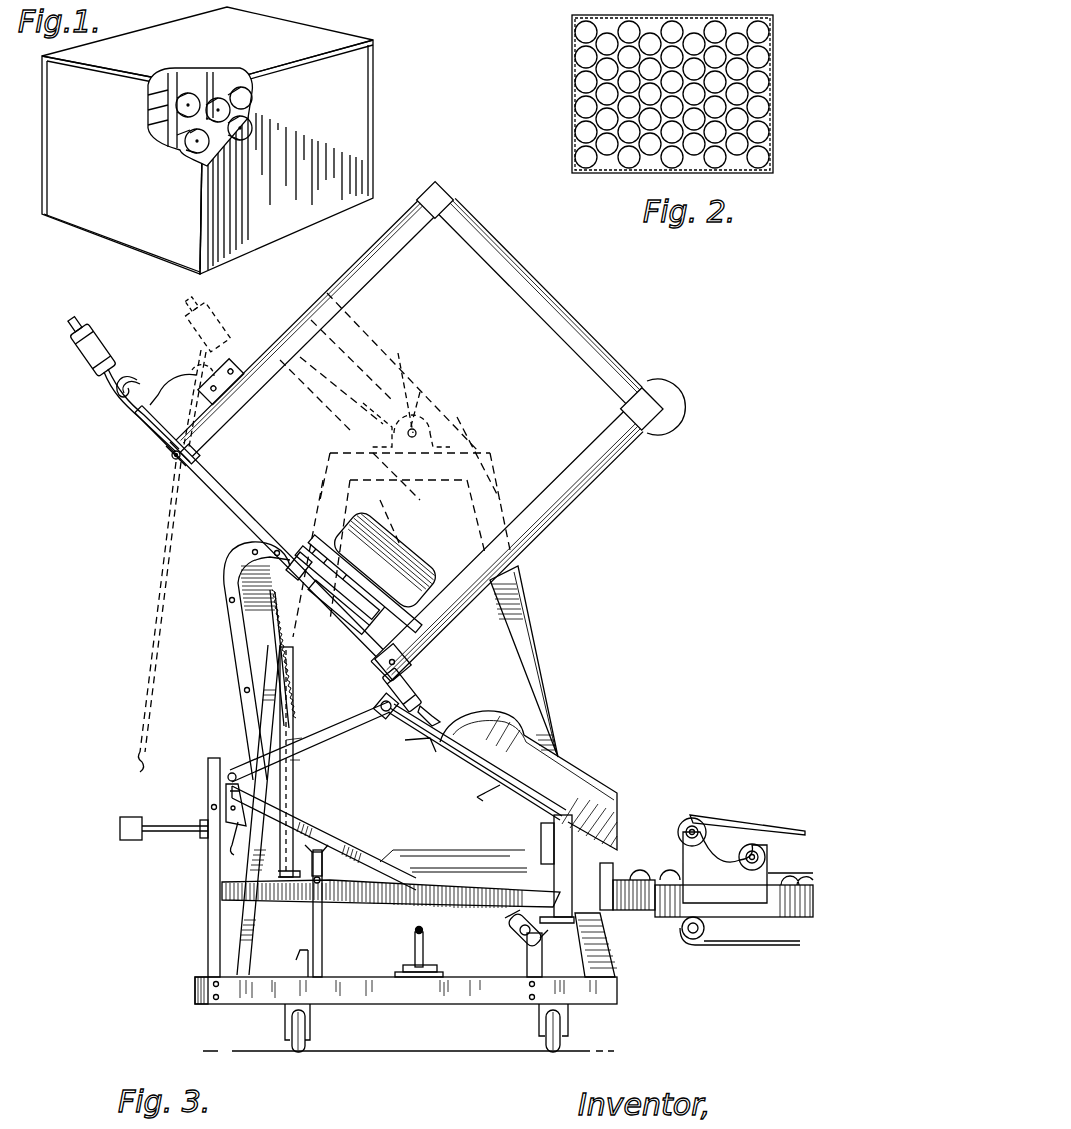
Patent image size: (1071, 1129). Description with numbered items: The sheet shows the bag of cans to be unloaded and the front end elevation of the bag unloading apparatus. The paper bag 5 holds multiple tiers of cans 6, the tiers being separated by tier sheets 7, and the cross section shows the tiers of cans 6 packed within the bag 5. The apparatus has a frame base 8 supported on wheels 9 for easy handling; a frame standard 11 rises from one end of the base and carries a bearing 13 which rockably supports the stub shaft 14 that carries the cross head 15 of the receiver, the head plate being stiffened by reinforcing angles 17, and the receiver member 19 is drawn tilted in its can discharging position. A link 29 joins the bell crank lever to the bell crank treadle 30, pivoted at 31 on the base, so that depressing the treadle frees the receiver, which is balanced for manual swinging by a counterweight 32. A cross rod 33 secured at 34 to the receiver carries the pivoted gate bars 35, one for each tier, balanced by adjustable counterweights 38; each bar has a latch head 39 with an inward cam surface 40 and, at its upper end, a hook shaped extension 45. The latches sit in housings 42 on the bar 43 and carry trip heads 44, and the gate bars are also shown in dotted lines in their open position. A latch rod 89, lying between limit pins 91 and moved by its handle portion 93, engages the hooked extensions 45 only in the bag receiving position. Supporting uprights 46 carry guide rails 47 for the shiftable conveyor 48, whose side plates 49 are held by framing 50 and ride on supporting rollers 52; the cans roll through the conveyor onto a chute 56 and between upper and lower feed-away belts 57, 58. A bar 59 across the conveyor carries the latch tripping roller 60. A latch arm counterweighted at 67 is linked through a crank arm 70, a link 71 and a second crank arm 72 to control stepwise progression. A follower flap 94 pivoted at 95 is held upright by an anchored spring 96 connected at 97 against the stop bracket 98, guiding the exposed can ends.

In FIG. 1, the bag 5 is at (372, 52).
In FIG. 2, the bag 5 is at (572, 60).
In FIG. 1, the cans 6 is at (216, 80).
In FIG. 2, the cans 6 is at (586, 133).
In FIG. 3, the cans 6 is at (668, 874).
In FIG. 1, the tier sheets 7 is at (192, 78).
In FIG. 3, the frame base 8 is at (460, 998).
In FIG. 3, the wheels 9 is at (312, 1052).
In FIG. 3, the frame standard 11 is at (530, 650).
In FIG. 3, the bearing 13 is at (425, 428).
In FIG. 3, the stub shaft 14 is at (420, 395).
In FIG. 3, the cross head 15 is at (398, 360).
In FIG. 3, the reinforcing angles 17 is at (350, 432).
In FIG. 3, the tilting frame 19 is at (372, 250).
In FIG. 3, the link 29 is at (422, 930).
In FIG. 3, the bell crank treadle 30 is at (425, 946).
In FIG. 3, the treadle pivot 31 is at (405, 962).
In FIG. 3, the counterweight 32 is at (672, 396).
In FIG. 3, the cross rod 33 is at (172, 458).
In FIG. 3, the rod securing point 34 is at (196, 458).
In FIG. 3, the gate bars 35 is at (245, 522).
In FIG. 3, the counterweights 38 is at (103, 336).
In FIG. 3, the latch heads 39 is at (140, 748).
In FIG. 3, the cam surface 40 is at (140, 758).
In FIG. 3, the housing 42 is at (412, 690).
In FIG. 3, the bar 43 is at (412, 658).
In FIG. 3, the trip heads 44 is at (438, 710).
In FIG. 3, the hook shaped extensions 45 is at (190, 348).
In FIG. 3, the supporting uprights 46 is at (312, 940).
In FIG. 3, the guide rails 47 is at (312, 905).
In FIG. 3, the shiftable conveyor 48 is at (560, 776).
In FIG. 3, the side plates 49 is at (520, 752).
In FIG. 3, the framing 50 is at (300, 798).
In FIG. 3, the supporting rollers 52 is at (325, 860).
In FIG. 3, the chute 56 is at (636, 912).
In FIG. 3, the upper feed-away belt 57 is at (760, 822).
In FIG. 3, the lower feed-away belt 58 is at (766, 946).
In FIG. 3, the bar 59 is at (425, 756).
In FIG. 3, the latch tripping roller 60 is at (386, 714).
In FIG. 3, the counterweight 67 is at (136, 842).
In FIG. 3, the crank arm 70 is at (232, 793).
In FIG. 3, the link 71 is at (320, 748).
In FIG. 3, the crank arm 72 is at (366, 730).
In FIG. 3, the latch rod 89 is at (185, 378).
In FIG. 3, the limit pins 91 is at (226, 370).
In FIG. 3, the handle portion 93 is at (150, 424).
In FIG. 3, the follower flap 94 is at (378, 548).
In FIG. 3, the flap pivot 95 is at (240, 568).
In FIG. 3, the anchored spring 96 is at (248, 642).
In FIG. 3, the spring connection 97 is at (242, 598).
In FIG. 3, the stop bracket 98 is at (320, 570).